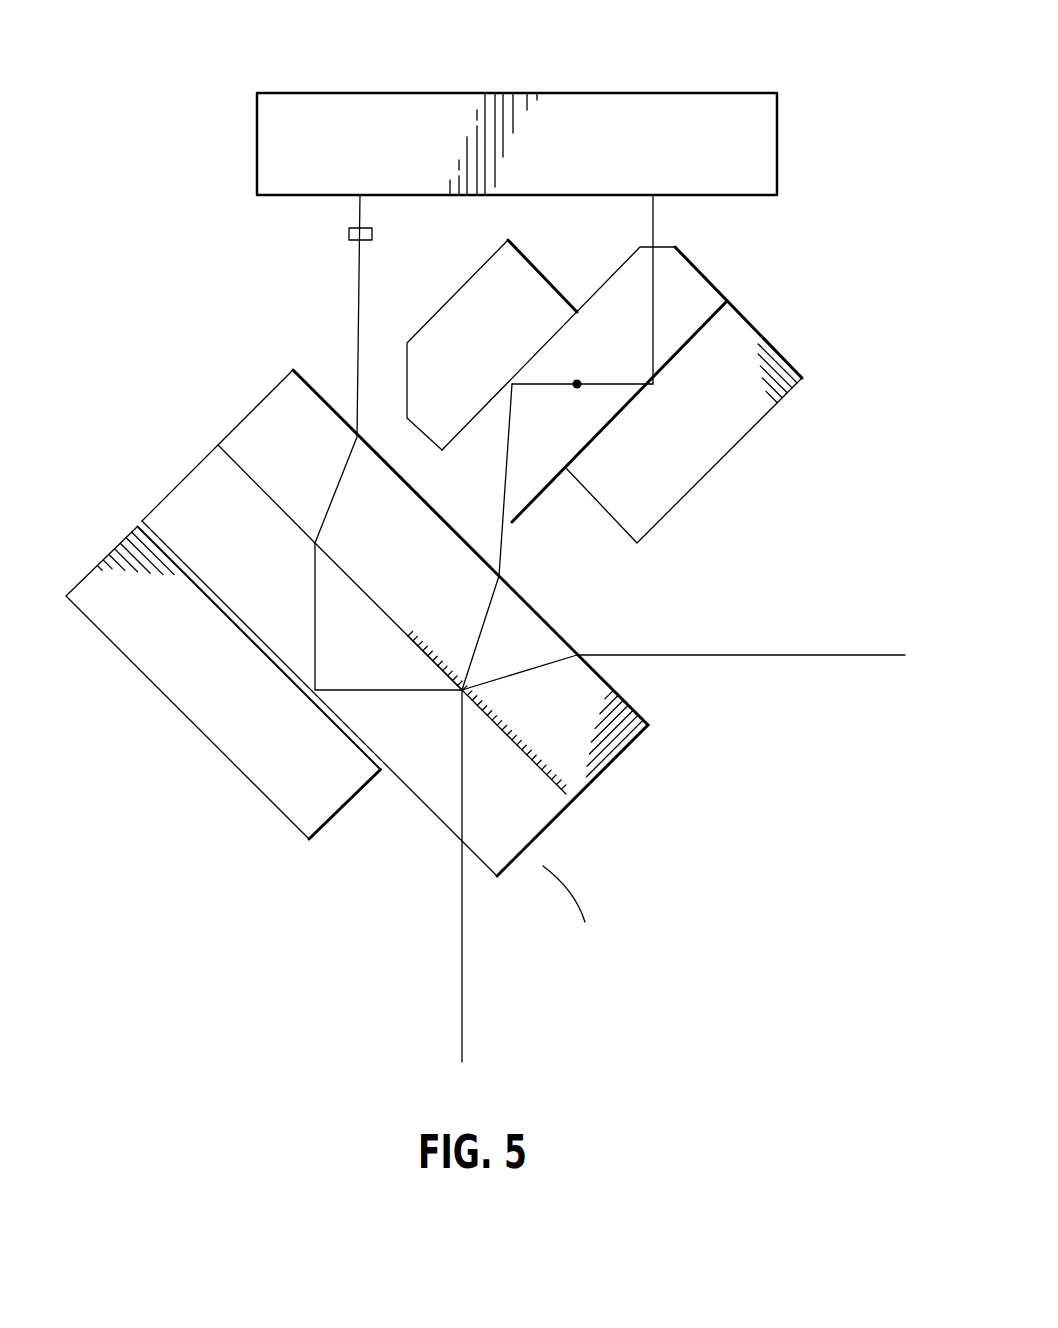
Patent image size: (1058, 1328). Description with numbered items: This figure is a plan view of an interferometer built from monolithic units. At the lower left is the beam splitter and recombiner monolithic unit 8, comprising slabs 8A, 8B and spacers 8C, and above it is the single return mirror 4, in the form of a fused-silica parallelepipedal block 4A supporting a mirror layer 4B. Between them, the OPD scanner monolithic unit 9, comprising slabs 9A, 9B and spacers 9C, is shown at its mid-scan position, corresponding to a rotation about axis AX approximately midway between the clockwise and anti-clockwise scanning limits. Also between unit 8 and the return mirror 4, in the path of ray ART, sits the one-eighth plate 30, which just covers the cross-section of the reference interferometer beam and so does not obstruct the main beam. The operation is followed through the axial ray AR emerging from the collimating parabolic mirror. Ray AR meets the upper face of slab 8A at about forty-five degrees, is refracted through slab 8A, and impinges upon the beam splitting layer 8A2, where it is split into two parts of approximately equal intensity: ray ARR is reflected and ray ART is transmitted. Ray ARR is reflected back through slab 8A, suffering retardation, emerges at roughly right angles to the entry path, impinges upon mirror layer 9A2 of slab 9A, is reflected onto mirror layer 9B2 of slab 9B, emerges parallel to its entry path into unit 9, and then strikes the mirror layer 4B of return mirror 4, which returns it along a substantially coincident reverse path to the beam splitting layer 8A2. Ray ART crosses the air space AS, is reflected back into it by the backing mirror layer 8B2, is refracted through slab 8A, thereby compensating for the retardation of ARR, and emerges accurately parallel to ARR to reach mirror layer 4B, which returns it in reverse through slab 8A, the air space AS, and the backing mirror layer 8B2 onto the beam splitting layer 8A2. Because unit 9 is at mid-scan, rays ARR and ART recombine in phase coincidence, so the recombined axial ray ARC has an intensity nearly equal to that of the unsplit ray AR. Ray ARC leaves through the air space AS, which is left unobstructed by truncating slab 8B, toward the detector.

The single return mirror 4 is at (243, 145).
The fused-silica parallelepipedal block 4A is at (552, 107).
The mirror layer 4B is at (287, 198).
The ⅛ plate 30 is at (291, 271).
The OPD scanner monolithic unit 9 is at (773, 318).
The slab 9A is at (465, 300).
The spacers 9C is at (627, 283).
The mirror layer 9A2 is at (467, 440).
The mirror layer 9B2 is at (703, 322).
The slab 9B is at (760, 427).
The axis AX is at (578, 381).
The beam splitter and recombiner monolithic unit 8 is at (143, 388).
The slab 8A is at (263, 423).
The spacers 8C is at (200, 482).
The backing mirror layer 8B2 is at (154, 530).
The slab 8B is at (132, 641).
The beam splitting layer 8A2 is at (557, 797).
The reflected ray ARR is at (500, 550).
The axial ray AR is at (785, 655).
The transmitted ray ART is at (393, 695).
The recombined axial ray ARC is at (458, 972).
The air space AS is at (571, 909).